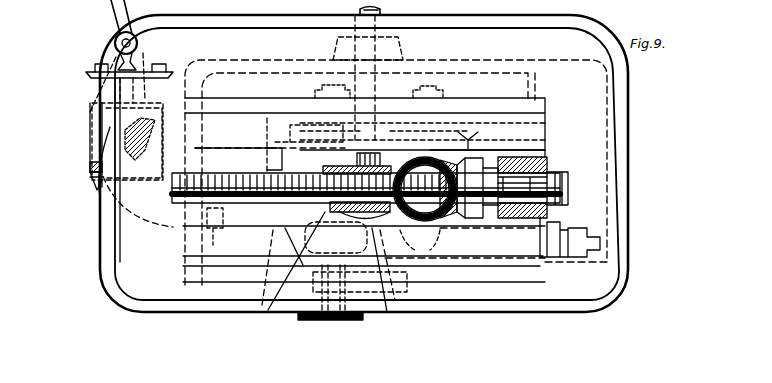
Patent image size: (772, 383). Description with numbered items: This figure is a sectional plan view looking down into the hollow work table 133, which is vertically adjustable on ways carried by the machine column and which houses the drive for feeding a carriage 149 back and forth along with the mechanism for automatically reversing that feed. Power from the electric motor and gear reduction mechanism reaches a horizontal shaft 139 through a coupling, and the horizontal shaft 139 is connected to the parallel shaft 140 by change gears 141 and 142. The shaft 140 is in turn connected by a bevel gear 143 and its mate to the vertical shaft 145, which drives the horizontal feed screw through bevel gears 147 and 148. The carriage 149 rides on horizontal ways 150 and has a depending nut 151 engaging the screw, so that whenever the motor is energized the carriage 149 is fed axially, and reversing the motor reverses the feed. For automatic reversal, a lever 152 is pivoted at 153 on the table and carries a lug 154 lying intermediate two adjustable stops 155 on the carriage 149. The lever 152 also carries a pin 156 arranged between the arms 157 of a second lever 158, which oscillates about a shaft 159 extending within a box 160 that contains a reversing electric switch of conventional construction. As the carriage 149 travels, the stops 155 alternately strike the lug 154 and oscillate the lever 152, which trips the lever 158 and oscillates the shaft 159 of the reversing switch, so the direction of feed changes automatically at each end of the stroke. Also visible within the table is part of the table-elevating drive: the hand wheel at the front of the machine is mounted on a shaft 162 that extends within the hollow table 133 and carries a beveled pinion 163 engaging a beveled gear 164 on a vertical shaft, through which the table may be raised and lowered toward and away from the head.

The work table 133 is at (203, 312).
The horizontal shaft 139 is at (275, 285).
The parallel shaft 140 is at (486, 110).
The change gear 141 is at (305, 98).
The change gear 142 is at (452, 103).
The bevel gear 143 is at (470, 126).
The vertical shaft 145 is at (441, 238).
The bevel gear 147 is at (408, 231).
The bevel gear 148 is at (543, 163).
The carriage 149 is at (100, 79).
The horizontal ways 150 is at (208, 122).
The depending nut 151 is at (335, 165).
The lever 152 is at (145, 92).
The pivot 153 is at (114, 44).
The lug 154 is at (137, 63).
The adjustable stops 155 is at (118, 85).
The pin 156 is at (100, 122).
The arms 157 is at (178, 184).
The lever 158 is at (131, 230).
The shaft 159 is at (105, 215).
The box 160 is at (90, 127).
The shaft 162 is at (383, 9).
The beveled pinion 163 is at (380, 142).
The beveled gear 164 is at (388, 312).